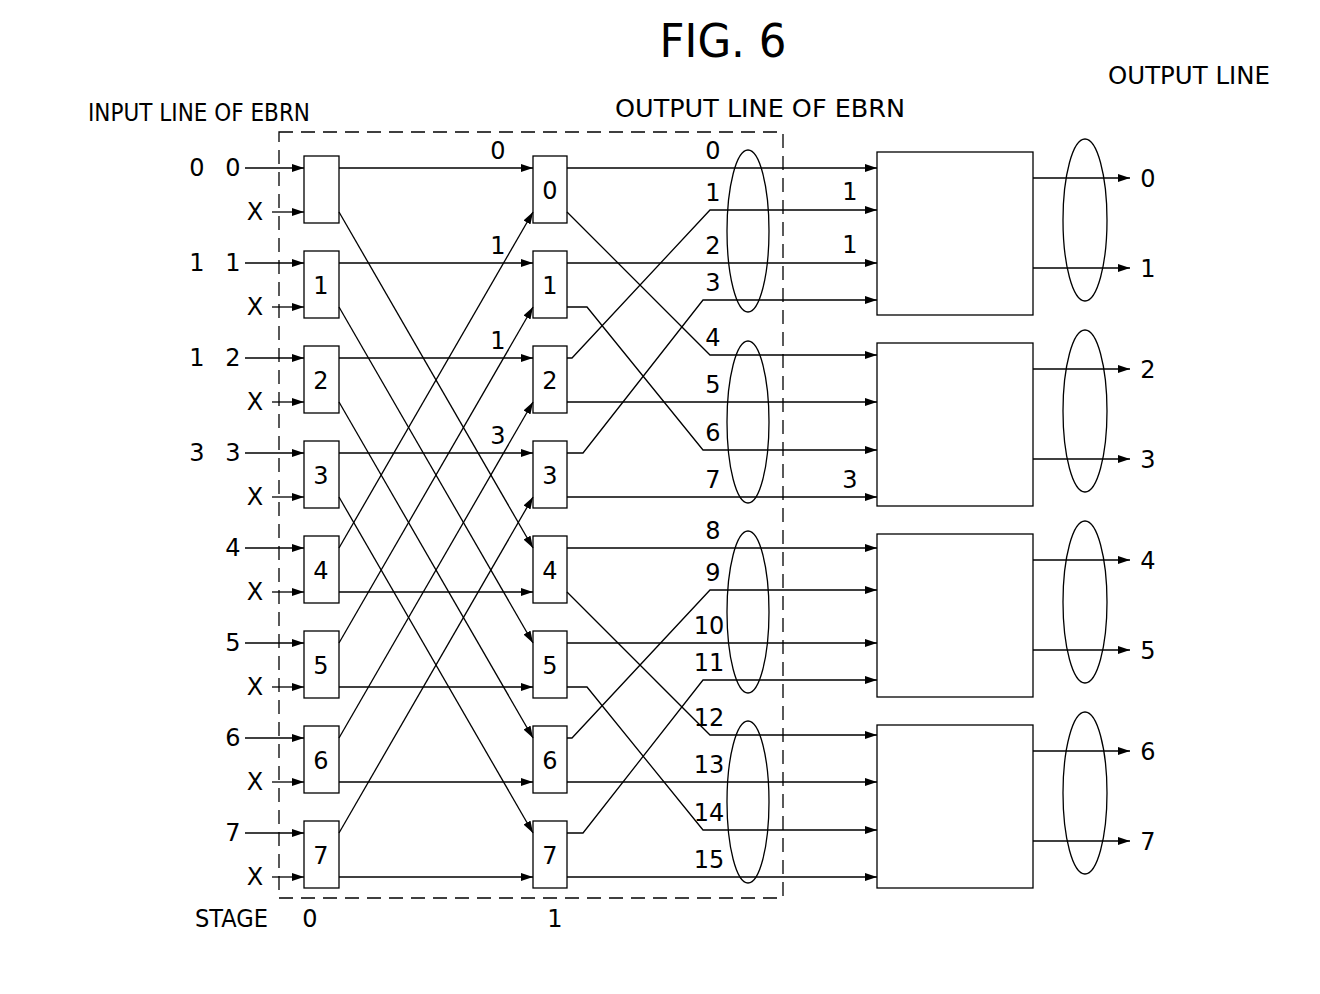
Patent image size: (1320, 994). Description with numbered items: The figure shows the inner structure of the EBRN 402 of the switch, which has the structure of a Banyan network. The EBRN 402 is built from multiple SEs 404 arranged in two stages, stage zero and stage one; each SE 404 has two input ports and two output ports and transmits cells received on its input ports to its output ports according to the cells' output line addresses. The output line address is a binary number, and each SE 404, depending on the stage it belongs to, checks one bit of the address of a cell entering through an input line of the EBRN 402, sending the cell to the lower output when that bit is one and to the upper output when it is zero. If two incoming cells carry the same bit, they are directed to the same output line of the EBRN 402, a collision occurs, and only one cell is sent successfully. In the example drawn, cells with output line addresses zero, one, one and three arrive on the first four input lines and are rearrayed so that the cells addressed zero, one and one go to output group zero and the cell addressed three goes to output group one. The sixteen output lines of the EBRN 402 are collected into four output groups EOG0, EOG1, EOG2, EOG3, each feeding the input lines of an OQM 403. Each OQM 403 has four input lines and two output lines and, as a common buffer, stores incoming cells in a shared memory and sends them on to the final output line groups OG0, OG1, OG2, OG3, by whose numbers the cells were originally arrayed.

The EBRN 402 is at (481, 131).
The OQM 403 is at (938, 152).
The SE 404 is at (321, 168).
The EBRN output group 0 EOG0 is at (757, 160).
The EBRN output group 1 EOG1 is at (757, 351).
The EBRN output group 2 EOG2 is at (757, 541).
The EBRN output group 3 EOG3 is at (757, 731).
The output line group 0 OG0 is at (1094, 139).
The output line group 1 OG1 is at (1094, 330).
The output line group 2 OG2 is at (1094, 521).
The output line group 3 OG3 is at (1094, 712).